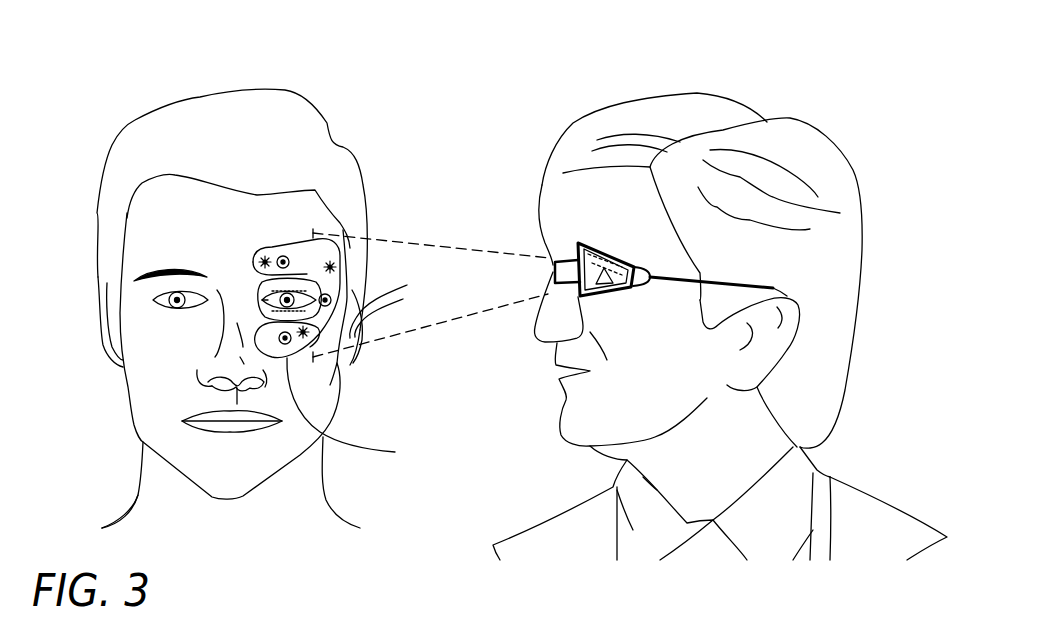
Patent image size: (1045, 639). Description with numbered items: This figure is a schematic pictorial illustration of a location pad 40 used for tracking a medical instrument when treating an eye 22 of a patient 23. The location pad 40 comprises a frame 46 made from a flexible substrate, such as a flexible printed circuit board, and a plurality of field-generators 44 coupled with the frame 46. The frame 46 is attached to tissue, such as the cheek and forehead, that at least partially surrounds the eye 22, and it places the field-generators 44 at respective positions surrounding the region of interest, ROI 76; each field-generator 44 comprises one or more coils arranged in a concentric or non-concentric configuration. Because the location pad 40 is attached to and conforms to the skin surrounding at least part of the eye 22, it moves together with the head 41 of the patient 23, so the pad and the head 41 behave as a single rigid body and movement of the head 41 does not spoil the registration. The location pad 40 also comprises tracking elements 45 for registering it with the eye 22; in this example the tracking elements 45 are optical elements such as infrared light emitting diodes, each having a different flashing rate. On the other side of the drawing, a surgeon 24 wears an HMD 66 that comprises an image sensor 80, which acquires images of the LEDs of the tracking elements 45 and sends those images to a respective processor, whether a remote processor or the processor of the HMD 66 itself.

The head 41 is at (158, 112).
The tracking elements 45 is at (330, 261).
The ROI 76 is at (264, 294).
The eye 22 is at (255, 272).
The field-generators 44 is at (396, 307).
The location pad 40 is at (320, 367).
The frame 46 is at (358, 412).
The patient 23 is at (132, 510).
The HMD 66 is at (585, 243).
The image sensor 80 is at (649, 270).
The surgeon 24 is at (880, 493).